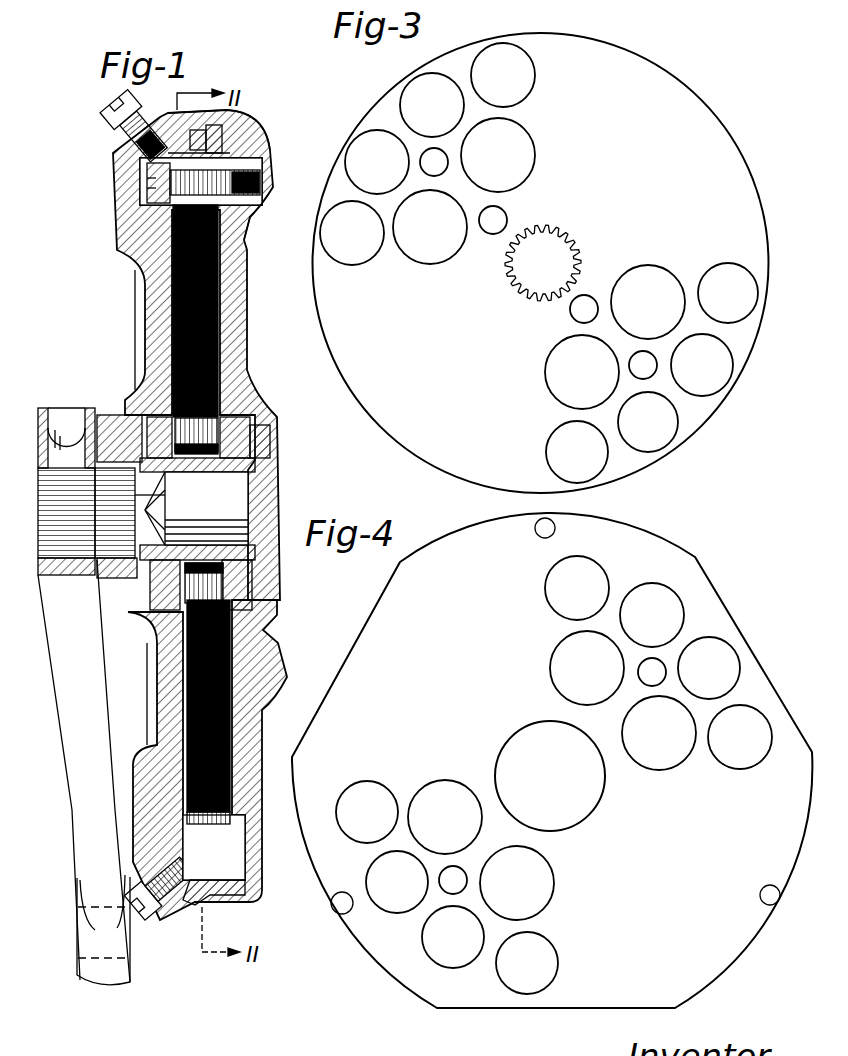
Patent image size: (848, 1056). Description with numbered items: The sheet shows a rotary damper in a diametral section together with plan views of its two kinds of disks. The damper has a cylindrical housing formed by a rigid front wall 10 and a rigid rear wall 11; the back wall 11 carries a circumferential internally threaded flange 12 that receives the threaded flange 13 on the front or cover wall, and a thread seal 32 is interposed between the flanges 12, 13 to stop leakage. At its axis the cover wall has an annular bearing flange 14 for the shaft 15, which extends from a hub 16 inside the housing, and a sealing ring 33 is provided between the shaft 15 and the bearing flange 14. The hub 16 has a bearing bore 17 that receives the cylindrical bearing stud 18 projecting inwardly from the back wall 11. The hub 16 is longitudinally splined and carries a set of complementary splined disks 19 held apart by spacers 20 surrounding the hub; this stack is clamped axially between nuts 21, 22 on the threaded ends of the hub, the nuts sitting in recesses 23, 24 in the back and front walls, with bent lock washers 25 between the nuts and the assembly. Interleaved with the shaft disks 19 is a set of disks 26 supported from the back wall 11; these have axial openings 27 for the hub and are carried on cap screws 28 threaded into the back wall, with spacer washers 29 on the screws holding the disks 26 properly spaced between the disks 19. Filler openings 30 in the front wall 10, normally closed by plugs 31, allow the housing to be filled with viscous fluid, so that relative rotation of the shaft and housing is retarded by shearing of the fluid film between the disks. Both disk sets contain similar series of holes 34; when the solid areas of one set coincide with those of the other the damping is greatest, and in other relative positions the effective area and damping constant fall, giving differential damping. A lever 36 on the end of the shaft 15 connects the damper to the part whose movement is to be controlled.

In FIG. 1, the front wall 10 is at (152, 287).
In FIG. 1, the rear wall 11 is at (238, 302).
In FIG. 1, the internally threaded flange 12 is at (207, 111).
In FIG. 1, the threaded flange 13 is at (222, 140).
In FIG. 1, the annular bearing flange 14 is at (118, 442).
In FIG. 1, the shaft 15 is at (110, 538).
In FIG. 1, the hub 16 is at (250, 466).
In FIG. 1, the bearing bore 17 is at (145, 508).
In FIG. 1, the cylindrical bearing stud 18 is at (238, 488).
In FIG. 1, the splined disks 19 is at (215, 326).
In FIG. 3, the splined disks 19 is at (640, 462).
In FIG. 1, the spacers 20 is at (220, 410).
In FIG. 1, the nut 21 is at (256, 440).
In FIG. 1, the nut 22 is at (140, 428).
In FIG. 1, the recess 23 is at (242, 426).
In FIG. 1, the recess 24 is at (150, 417).
In FIG. 1, the bent lock washers 25 is at (240, 599).
In FIG. 1, the disks 26 is at (243, 205).
In FIG. 4, the disks 26 is at (658, 548).
In FIG. 4, the axial openings 27 is at (527, 741).
In FIG. 1, the cap screws 28 is at (150, 193).
In FIG. 1, the spacer washers 29 is at (225, 150).
In FIG. 1, the filler openings 30 is at (110, 148).
In FIG. 1, the plugs 31 is at (113, 116).
In FIG. 1, the thread seal 32 is at (206, 138).
In FIG. 1, the sealing ring 33 is at (126, 462).
In FIG. 3, the holes 34 is at (520, 172).
In FIG. 4, the holes 34 is at (563, 675).
In FIG. 1, the lever 36 is at (72, 747).